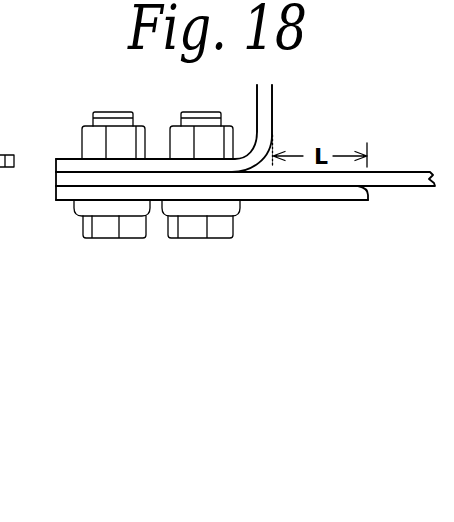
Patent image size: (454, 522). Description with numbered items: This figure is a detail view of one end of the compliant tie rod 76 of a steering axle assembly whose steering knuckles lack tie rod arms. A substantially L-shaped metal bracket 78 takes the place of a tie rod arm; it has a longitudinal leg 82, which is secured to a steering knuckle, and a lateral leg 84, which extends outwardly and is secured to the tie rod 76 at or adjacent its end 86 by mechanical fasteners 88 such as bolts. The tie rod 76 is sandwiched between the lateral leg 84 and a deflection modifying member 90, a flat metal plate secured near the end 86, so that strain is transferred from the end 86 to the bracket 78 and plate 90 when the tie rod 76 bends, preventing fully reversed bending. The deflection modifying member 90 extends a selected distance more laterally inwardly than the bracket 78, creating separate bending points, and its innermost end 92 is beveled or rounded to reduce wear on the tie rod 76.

The tie rod 76 is at (408, 180).
The bracket 78 is at (277, 128).
The longitudinal leg 82 is at (267, 100).
The lateral leg 84 is at (163, 158).
The end 86 is at (50, 179).
The mechanical fastener 88 is at (131, 230).
The deflection modifying member 90 is at (307, 195).
The innermost end 92 is at (365, 190).